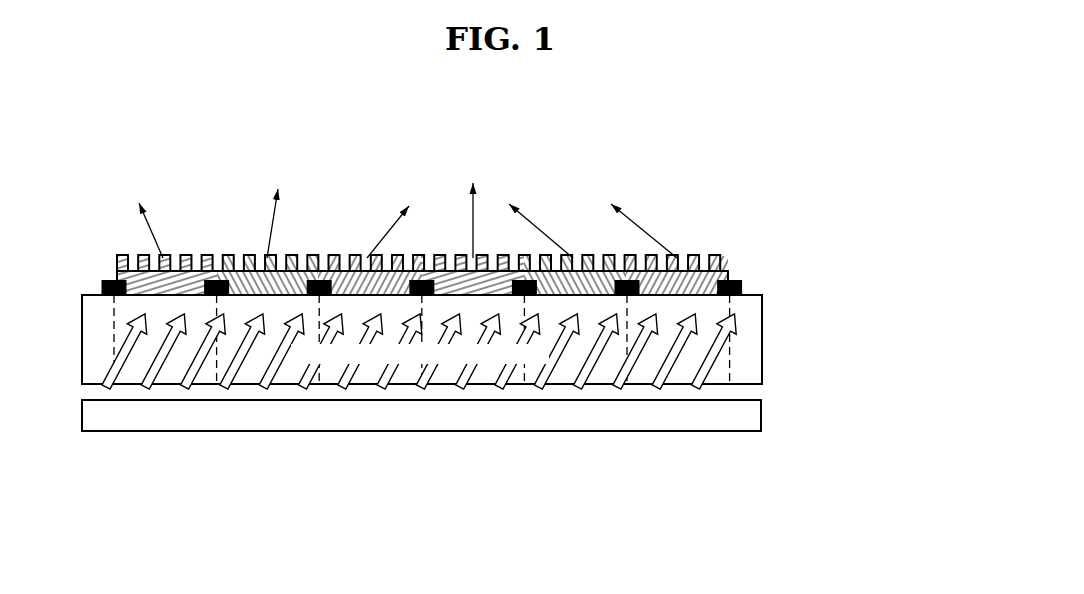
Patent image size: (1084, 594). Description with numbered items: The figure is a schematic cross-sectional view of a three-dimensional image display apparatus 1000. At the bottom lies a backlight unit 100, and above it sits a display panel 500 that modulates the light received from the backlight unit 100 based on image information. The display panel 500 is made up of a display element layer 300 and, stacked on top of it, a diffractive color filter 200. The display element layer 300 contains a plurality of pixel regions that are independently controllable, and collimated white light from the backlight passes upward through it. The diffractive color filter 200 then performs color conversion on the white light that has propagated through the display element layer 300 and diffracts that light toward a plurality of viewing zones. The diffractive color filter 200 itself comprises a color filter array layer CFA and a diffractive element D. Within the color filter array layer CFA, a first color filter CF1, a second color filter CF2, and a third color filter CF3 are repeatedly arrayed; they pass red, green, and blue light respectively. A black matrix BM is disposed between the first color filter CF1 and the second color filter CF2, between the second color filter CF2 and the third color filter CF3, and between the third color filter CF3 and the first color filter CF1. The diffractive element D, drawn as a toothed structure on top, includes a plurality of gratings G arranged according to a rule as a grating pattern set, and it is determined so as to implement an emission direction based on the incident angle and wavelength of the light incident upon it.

The 3D image display apparatus 1000 is at (779, 169).
The display panel 500 is at (873, 260).
The diffractive color filter 200 is at (828, 243).
The display element layer 300 is at (758, 337).
The backlight unit 100 is at (761, 415).
The color filter array layer CFA is at (749, 284).
The first color filter CF1 is at (177, 280).
The second color filter CF2 is at (258, 280).
The third color filter CF3 is at (362, 280).
The black matrix BM is at (623, 279).
The diffractive element D is at (748, 259).
The grating G is at (697, 257).